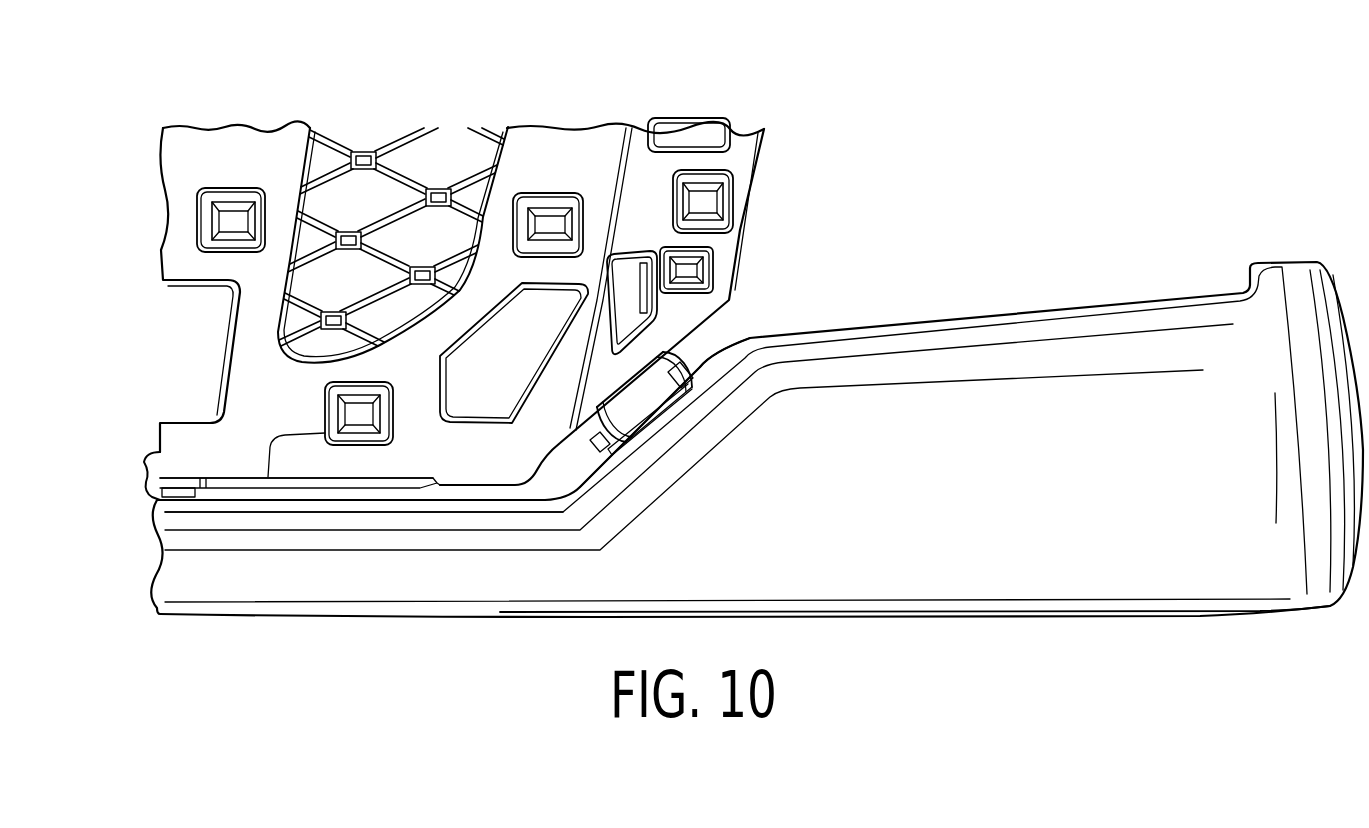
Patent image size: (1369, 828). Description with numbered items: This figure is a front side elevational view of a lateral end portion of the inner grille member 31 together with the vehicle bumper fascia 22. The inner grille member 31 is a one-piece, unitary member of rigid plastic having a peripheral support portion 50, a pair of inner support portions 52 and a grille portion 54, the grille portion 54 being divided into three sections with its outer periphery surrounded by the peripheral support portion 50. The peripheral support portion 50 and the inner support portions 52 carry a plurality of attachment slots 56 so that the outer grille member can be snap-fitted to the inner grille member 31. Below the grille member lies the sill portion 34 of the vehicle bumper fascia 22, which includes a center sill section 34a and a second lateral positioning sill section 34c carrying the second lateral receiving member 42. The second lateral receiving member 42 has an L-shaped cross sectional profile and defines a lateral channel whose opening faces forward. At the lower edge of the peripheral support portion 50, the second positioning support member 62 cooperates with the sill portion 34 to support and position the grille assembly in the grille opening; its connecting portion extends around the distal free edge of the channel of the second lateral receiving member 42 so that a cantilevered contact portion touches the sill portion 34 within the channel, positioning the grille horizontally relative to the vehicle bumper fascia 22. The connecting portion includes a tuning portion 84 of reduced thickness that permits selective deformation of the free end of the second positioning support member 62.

The vehicle bumper fascia 22 is at (1028, 313).
The inner grille member 31 is at (765, 158).
The sill portion 34 is at (358, 508).
The center sill section 34a is at (142, 466).
The second lateral positioning sill section 34c is at (715, 348).
The second lateral receiving member 42 is at (607, 457).
The peripheral support portion 50 is at (243, 453).
The inner support portions 52 is at (214, 152).
The grille portion 54 is at (410, 126).
The attachment slots 56 is at (234, 207).
The second positioning support member 62 is at (661, 428).
The tuning portion 84 is at (680, 394).